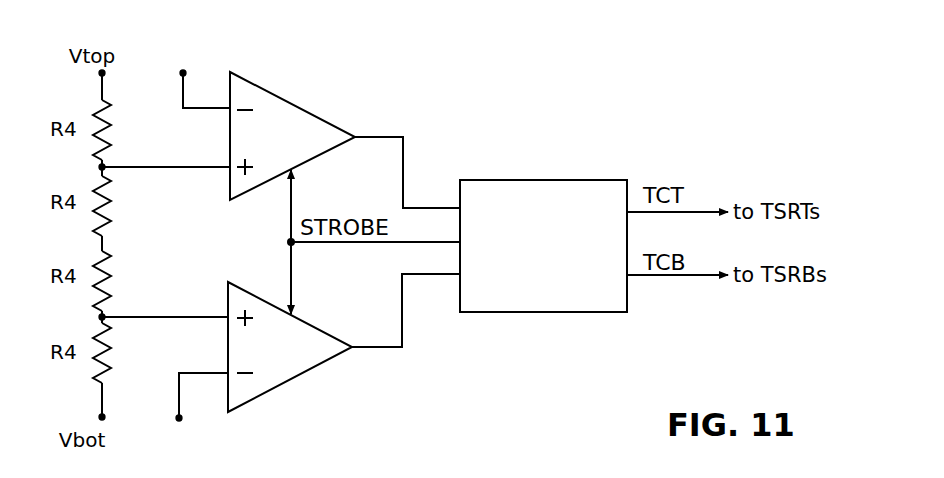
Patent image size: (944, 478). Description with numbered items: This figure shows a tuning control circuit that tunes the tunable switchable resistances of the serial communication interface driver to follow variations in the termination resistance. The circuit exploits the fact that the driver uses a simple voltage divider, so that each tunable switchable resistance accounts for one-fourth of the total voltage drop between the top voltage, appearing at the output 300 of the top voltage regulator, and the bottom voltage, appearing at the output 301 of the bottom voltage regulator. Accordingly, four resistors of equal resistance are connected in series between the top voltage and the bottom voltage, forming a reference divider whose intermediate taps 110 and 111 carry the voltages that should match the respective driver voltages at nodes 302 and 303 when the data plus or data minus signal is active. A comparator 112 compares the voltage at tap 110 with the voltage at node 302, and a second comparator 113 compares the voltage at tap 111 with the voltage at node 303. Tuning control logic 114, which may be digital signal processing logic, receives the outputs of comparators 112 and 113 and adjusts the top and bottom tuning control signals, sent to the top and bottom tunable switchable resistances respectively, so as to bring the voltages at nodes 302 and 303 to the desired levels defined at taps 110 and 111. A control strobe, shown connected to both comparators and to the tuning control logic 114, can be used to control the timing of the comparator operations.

The output of voltage regulator 300 is at (100, 92).
The output of voltage regulator 301 is at (100, 405).
The voltage node 302 is at (182, 90).
The voltage node 303 is at (177, 393).
The voltage tap 110 is at (193, 169).
The voltage tap 111 is at (163, 315).
The comparator 112 is at (298, 107).
The comparator 113 is at (292, 379).
The tuning control logic 114 is at (533, 180).